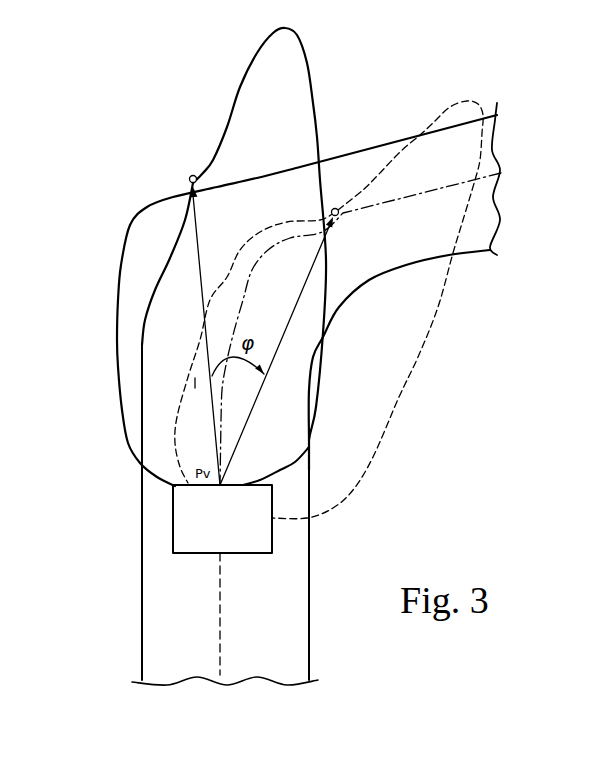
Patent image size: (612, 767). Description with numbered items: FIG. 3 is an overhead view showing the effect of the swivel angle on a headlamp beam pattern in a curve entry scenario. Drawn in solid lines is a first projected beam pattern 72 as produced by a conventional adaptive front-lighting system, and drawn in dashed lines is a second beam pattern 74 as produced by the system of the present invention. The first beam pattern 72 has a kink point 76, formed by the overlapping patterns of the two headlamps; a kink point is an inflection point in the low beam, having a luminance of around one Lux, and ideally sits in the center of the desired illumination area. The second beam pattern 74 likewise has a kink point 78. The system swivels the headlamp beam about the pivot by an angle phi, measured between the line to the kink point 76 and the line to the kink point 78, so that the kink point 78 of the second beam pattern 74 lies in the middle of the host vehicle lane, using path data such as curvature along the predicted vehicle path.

The first projected beam pattern 72 is at (118, 312).
The second beam pattern 74 is at (418, 357).
The kink point 76 is at (190, 175).
The kink point 78 is at (340, 209).